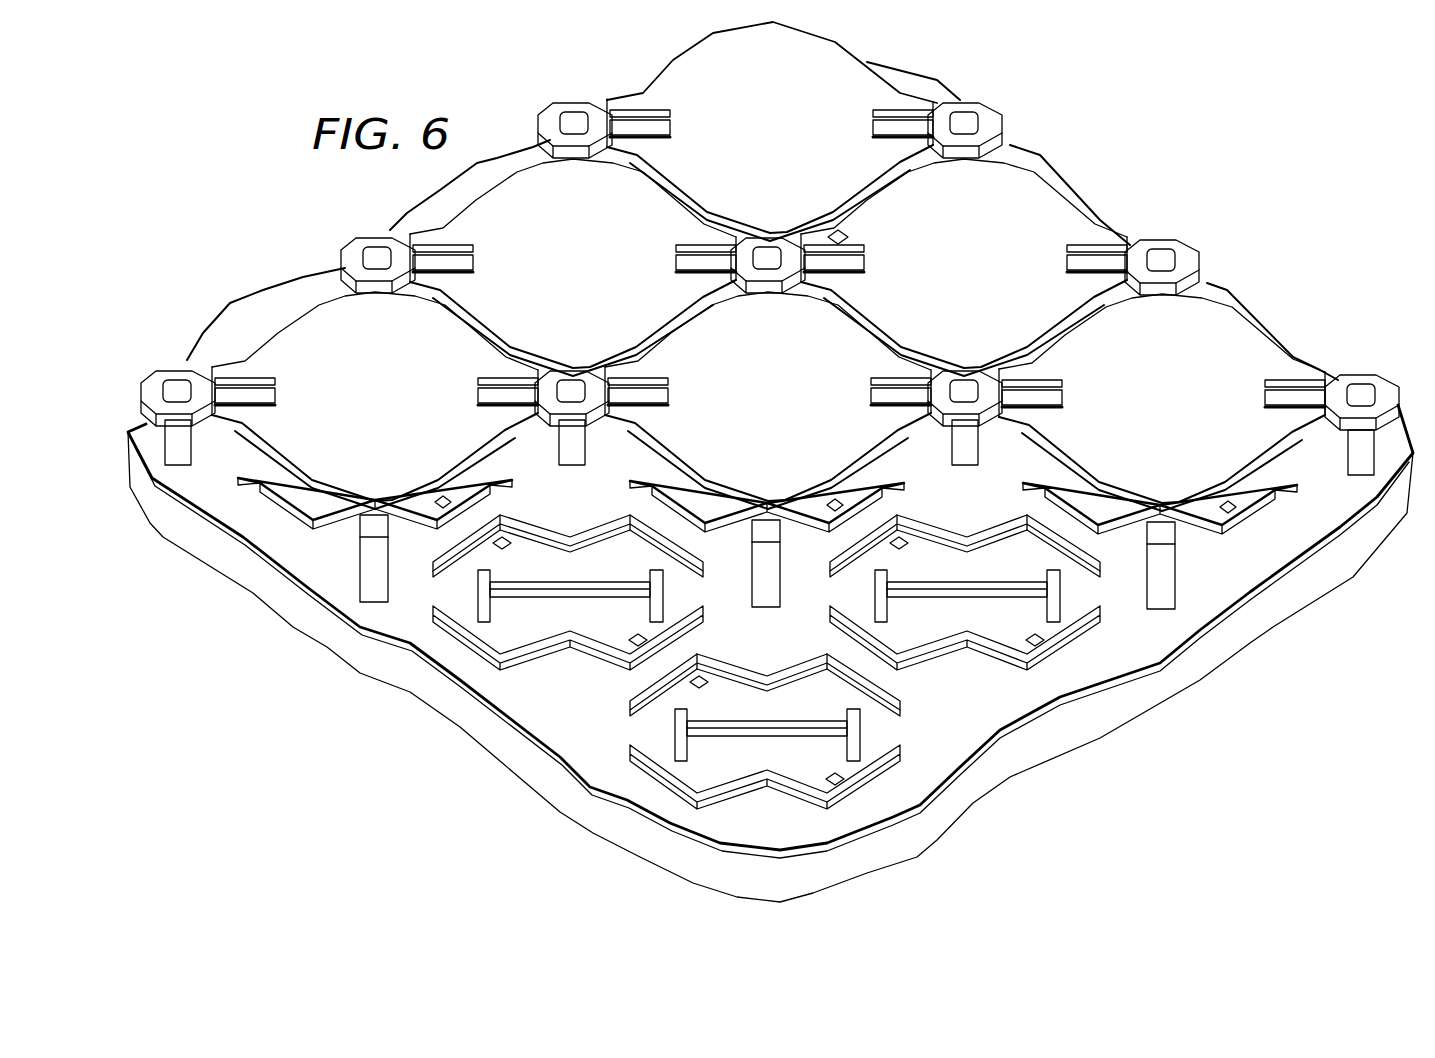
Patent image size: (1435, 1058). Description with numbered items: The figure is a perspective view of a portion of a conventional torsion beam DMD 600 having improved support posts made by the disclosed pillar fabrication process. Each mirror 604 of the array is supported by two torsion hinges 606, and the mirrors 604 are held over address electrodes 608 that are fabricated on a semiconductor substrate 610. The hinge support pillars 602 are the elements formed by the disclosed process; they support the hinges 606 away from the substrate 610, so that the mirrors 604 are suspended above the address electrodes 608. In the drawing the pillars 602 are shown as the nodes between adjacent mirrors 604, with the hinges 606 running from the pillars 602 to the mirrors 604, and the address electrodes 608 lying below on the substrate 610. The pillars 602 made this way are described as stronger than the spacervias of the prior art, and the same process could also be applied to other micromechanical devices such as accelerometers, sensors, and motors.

The torsion beam DMD 600 is at (775, 462).
The hinge support pillar 602 is at (557, 112).
The mirror 604 is at (796, 138).
The torsion hinge 606 is at (1083, 258).
The address electrode 608 is at (1029, 583).
The semiconductor substrate 610 is at (465, 727).